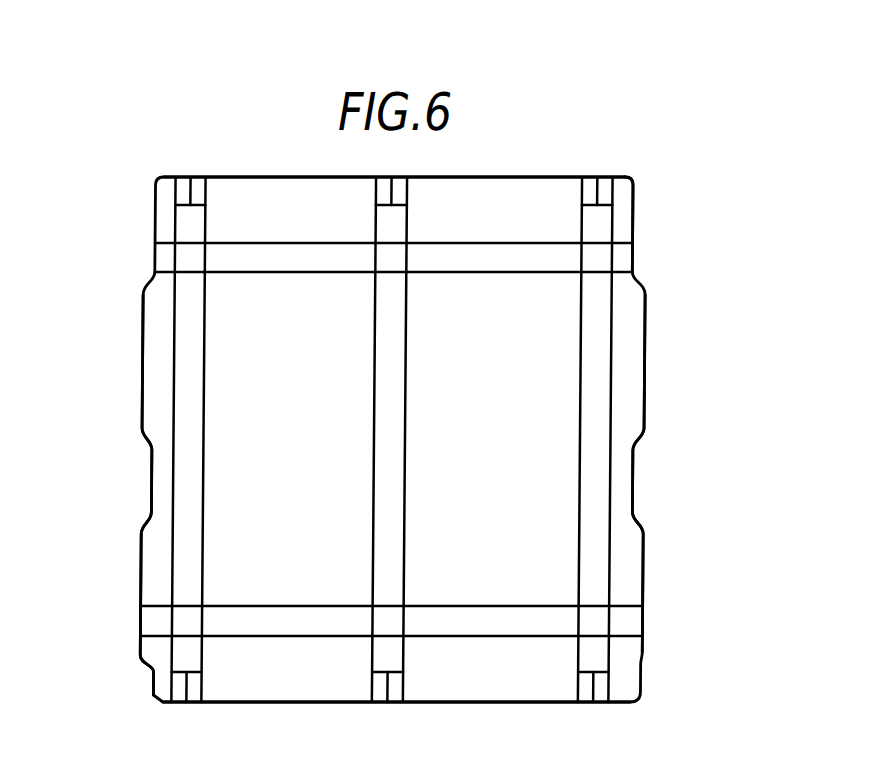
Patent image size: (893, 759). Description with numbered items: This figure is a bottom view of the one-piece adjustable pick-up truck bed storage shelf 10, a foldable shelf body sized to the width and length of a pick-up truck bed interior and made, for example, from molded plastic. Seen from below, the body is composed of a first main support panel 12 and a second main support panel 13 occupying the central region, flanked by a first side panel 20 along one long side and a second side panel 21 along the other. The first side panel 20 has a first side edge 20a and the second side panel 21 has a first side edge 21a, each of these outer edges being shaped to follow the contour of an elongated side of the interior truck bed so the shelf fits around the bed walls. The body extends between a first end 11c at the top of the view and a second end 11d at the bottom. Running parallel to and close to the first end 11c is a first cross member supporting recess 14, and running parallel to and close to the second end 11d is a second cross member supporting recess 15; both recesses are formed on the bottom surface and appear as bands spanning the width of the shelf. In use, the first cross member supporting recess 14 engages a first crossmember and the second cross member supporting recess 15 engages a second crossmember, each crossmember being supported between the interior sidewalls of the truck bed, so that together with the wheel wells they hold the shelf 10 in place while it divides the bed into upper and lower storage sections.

The one-piece adjustable pick-up truck bed storage shelf 10 is at (652, 138).
The first end 11c is at (480, 177).
The second end 11d is at (339, 702).
The first main support panel 12 is at (540, 192).
The second main support panel 13 is at (278, 187).
The first cross member supporting recess 14 is at (491, 262).
The second cross member supporting recess 15 is at (274, 620).
The first side panel 20 is at (623, 212).
The first side edge 20a is at (644, 378).
The second side panel 21 is at (156, 577).
The first side edge 21a is at (140, 428).